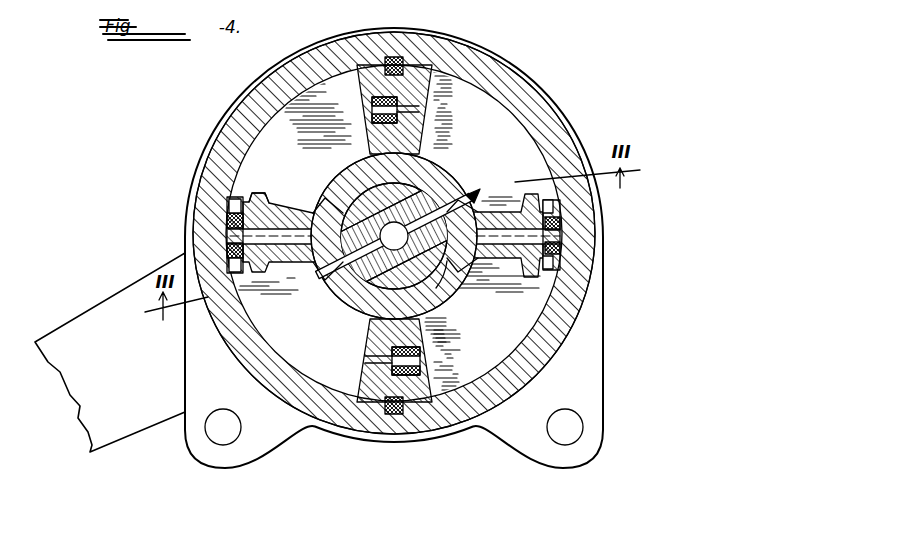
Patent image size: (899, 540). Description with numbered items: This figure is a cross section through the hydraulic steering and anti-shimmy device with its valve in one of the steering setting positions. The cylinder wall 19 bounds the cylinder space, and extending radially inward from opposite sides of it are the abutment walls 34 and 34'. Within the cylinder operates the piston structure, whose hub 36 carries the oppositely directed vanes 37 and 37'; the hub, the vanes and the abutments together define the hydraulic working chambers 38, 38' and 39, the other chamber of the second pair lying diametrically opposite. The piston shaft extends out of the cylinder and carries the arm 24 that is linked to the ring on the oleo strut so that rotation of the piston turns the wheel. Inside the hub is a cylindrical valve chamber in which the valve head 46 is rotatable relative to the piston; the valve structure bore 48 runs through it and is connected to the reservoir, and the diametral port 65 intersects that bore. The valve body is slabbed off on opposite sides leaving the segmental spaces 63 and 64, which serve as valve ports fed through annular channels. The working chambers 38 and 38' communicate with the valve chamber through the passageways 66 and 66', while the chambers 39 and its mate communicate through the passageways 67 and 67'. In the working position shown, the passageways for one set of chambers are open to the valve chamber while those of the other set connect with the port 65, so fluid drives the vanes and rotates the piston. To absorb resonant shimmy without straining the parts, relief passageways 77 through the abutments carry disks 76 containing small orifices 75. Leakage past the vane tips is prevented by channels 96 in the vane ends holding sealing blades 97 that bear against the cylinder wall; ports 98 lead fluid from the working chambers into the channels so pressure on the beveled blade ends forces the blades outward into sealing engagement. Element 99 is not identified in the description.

The cylinder wall 19 is at (543, 136).
The arm 24 is at (120, 427).
The abutment wall 34 is at (413, 105).
The abutment wall 34' is at (375, 366).
The hub 36 is at (433, 173).
The vane 37 is at (281, 254).
The vane 37' is at (504, 215).
The hydraulic working chamber 38 is at (245, 396).
The hydraulic working chamber 38' is at (394, 238).
The hydraulic working chamber 39 is at (297, 137).
The valve head 46 is at (370, 309).
The valve structure bore 48 is at (382, 257).
The segmental space 63 is at (385, 170).
The segmental space 64 is at (453, 297).
The port 65 is at (470, 187).
The passageway 66 is at (314, 282).
The passageway 66' is at (477, 201).
The passageway 67 is at (480, 281).
The passageway 67' is at (321, 181).
The orifice 75 is at (420, 358).
The disk 76 is at (391, 362).
The passageway 77 is at (423, 364).
The channel 96 is at (232, 250).
The sealing blade 97 is at (228, 215).
The port 98 is at (240, 262).
The arm tooth 99 is at (242, 198).